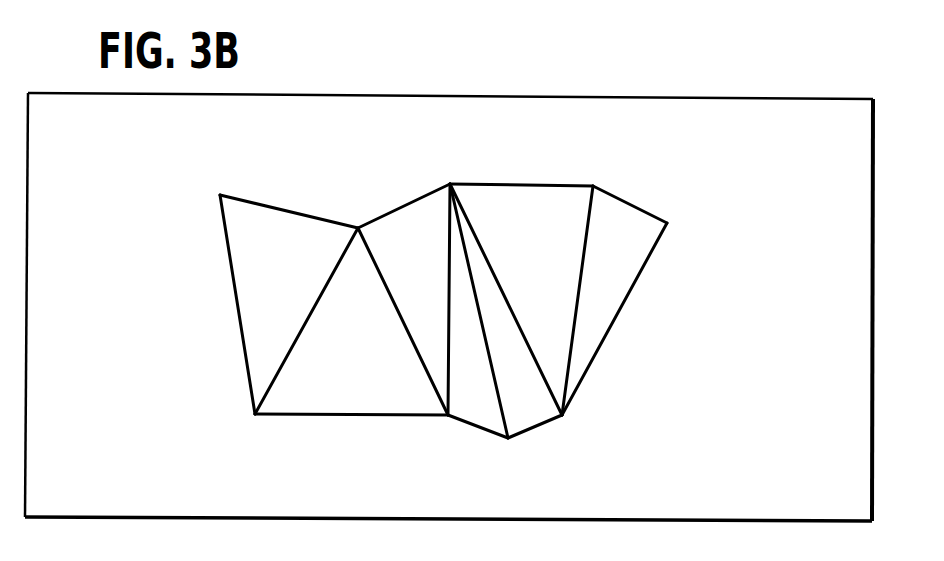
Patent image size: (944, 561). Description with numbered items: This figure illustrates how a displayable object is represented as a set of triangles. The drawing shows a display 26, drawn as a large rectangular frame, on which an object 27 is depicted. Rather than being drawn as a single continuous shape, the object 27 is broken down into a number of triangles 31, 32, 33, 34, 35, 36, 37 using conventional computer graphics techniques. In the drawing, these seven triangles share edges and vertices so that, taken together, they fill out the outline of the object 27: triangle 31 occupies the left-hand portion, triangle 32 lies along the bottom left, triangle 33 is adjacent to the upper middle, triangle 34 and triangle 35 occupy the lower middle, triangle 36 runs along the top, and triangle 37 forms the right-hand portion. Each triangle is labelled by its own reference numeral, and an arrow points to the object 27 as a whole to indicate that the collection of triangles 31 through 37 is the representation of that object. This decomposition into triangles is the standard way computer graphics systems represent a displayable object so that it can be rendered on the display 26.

The display 26 is at (695, 96).
The object 27 is at (589, 178).
The triangle 31 is at (242, 213).
The triangle 32 is at (295, 398).
The triangle 33 is at (404, 217).
The triangle 34 is at (480, 412).
The triangle 35 is at (515, 417).
The triangle 36 is at (492, 190).
The triangle 37 is at (620, 285).